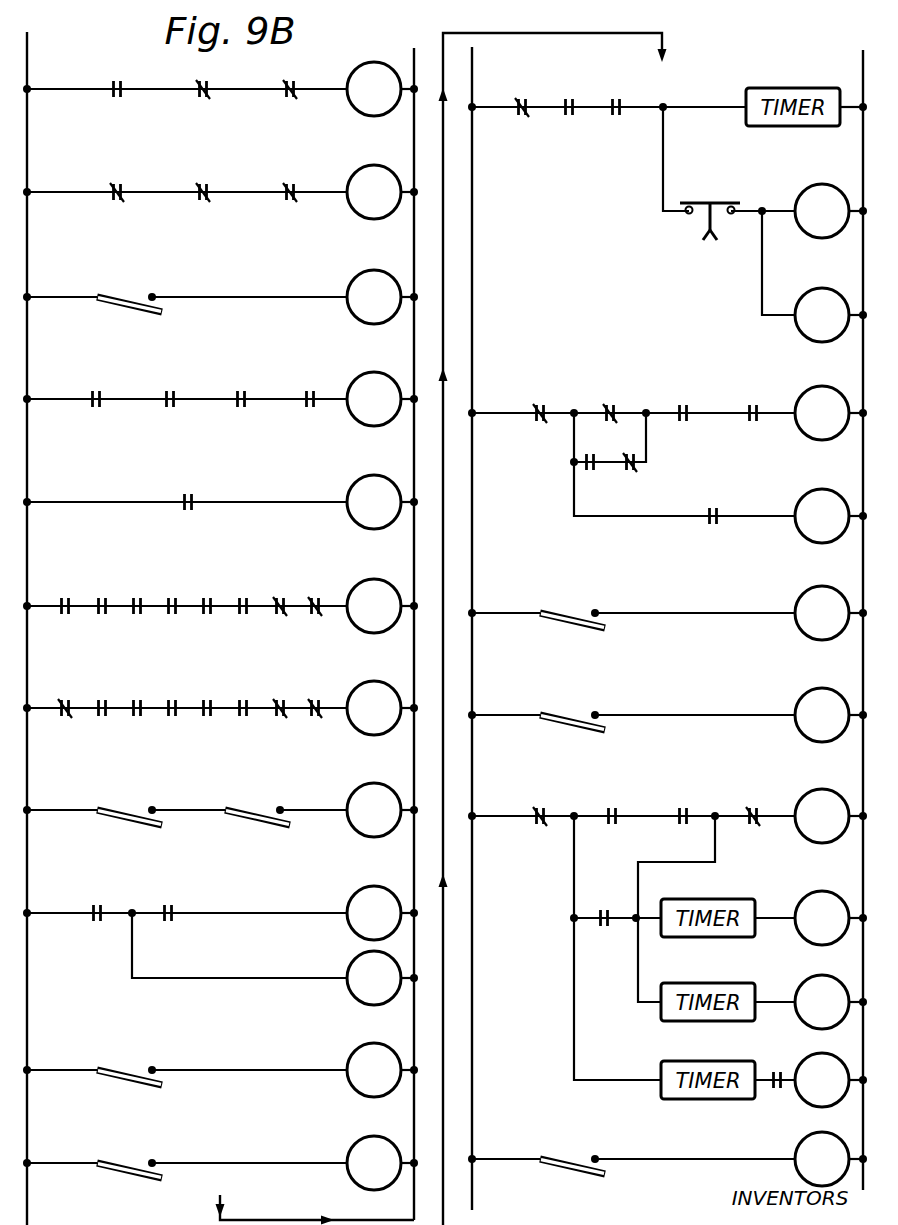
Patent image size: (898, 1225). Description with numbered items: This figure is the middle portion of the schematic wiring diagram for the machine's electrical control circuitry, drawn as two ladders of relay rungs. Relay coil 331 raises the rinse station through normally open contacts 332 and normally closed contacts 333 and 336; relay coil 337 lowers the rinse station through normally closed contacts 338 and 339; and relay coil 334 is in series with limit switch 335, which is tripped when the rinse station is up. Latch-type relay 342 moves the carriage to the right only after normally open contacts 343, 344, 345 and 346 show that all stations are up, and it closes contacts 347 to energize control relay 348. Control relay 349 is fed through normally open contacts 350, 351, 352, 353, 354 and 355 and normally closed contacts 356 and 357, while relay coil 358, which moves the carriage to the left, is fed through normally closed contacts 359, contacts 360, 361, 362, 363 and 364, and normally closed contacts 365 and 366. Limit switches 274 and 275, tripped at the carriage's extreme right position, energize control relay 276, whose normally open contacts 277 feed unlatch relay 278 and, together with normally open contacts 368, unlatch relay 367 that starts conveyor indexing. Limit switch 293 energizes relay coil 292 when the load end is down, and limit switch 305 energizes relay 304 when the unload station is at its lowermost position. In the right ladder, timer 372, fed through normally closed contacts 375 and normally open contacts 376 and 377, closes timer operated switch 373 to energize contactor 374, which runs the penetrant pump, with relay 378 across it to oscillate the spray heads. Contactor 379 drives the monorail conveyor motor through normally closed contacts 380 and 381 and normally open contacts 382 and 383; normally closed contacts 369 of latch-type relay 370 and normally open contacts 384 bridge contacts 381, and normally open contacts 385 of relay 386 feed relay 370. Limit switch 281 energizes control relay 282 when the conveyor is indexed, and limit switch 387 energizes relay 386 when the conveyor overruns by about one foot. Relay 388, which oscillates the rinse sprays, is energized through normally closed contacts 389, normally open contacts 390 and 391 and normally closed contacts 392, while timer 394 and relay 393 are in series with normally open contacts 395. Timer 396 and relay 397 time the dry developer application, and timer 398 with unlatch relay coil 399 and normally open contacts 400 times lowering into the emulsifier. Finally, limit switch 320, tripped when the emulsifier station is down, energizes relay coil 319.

The relay coil 331 is at (387, 64).
The normally open contacts 332 is at (136, 68).
The normally closed contacts 333 is at (188, 62).
The normally closed contacts 336 is at (275, 62).
The relay coil 337 is at (352, 172).
The normally closed contacts 338 is at (120, 186).
The normally closed contacts 339 is at (206, 186).
The relay coil 334 is at (350, 282).
The limit switch 335 is at (132, 297).
The latch-type relay 342 is at (378, 374).
The normally open contacts 343 is at (100, 392).
The normally open contacts 344 is at (173, 392).
The normally open contacts 345 is at (244, 392).
The relay contacts 346 is at (313, 392).
The contacts 347 is at (192, 495).
The control relay 348 is at (356, 478).
The control relay 349 is at (377, 580).
The normally open contacts 350 is at (60, 596).
The normally open contacts 351 is at (98, 596).
The normally open contacts 352 is at (132, 596).
The normally open relay contacts 353 is at (168, 596).
The normally open contacts 354 is at (202, 596).
The normally open contacts 355 is at (238, 596).
The normally closed contacts 356 is at (274, 596).
The normally closed relay contacts 357 is at (310, 596).
The relay coil 358 is at (379, 682).
The normally closed contacts 359 is at (60, 698).
The normally open contacts 360 is at (98, 698).
The contact 361 is at (132, 698).
The normally open contacts 362 is at (168, 698).
The normally open contacts 363 is at (202, 698).
The normally open contacts 364 is at (238, 698).
The normally closed contacts 365 is at (274, 698).
The normally closed contacts 366 is at (310, 698).
The limit switch 274 is at (128, 808).
The limit switch 275 is at (255, 808).
The control relay 276 is at (372, 786).
The normally open contacts 277 is at (100, 906).
The normally open contacts 368 is at (172, 906).
The unlatch relay 367 is at (373, 890).
The unlatch relay 278 is at (352, 960).
The limit switch 293 is at (130, 1070).
The relay coil 292 is at (355, 1050).
The limit switch 305 is at (130, 1162).
The relay 304 is at (352, 1148).
The normally closed contacts 375 is at (518, 100).
The normally open contacts 376 is at (565, 100).
The normally open contacts 377 is at (622, 102).
The timer 372 is at (808, 66).
The timer operated switch 373 is at (714, 202).
The contactor 374 is at (830, 166).
The relay 378 is at (826, 290).
The normally closed relay contacts 380 is at (545, 404).
The normally closed contacts 381 is at (616, 404).
The normally open contacts 382 is at (688, 404).
The normally open contacts 383 is at (758, 404).
The contactor 379 is at (840, 370).
The normally open contacts 384 is at (596, 472).
The normally closed contacts 369 is at (638, 466).
The normally open contacts 385 is at (742, 492).
The latch-type relay 370 is at (820, 490).
The limit switch 281 is at (575, 612).
The control relay 282 is at (820, 590).
The limit switch 387 is at (580, 713).
The relay 386 is at (820, 690).
The normally closed relay contacts 389 is at (545, 810).
The normally open contacts 390 is at (616, 810).
The normally open contacts 391 is at (688, 810).
The normally closed contacts 392 is at (758, 810).
The relay 388 is at (830, 792).
The normally open contacts 395 is at (608, 910).
The timer 394 is at (720, 900).
The relay 393 is at (846, 872).
The timer 396 is at (662, 1012).
The relay 397 is at (836, 978).
The timer 398 is at (662, 1096).
The normally open contacts 400 is at (780, 1072).
The unlatch relay coil 399 is at (808, 1104).
The limit switch 320 is at (568, 1158).
The relay coil 319 is at (796, 1142).